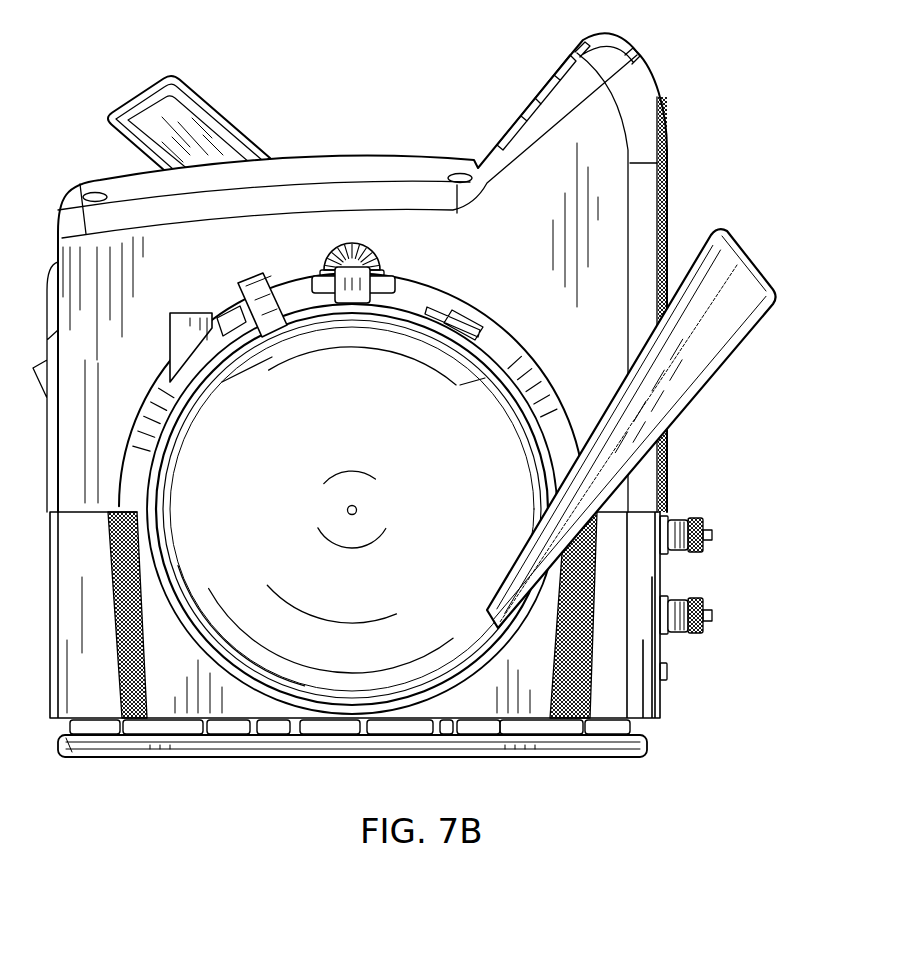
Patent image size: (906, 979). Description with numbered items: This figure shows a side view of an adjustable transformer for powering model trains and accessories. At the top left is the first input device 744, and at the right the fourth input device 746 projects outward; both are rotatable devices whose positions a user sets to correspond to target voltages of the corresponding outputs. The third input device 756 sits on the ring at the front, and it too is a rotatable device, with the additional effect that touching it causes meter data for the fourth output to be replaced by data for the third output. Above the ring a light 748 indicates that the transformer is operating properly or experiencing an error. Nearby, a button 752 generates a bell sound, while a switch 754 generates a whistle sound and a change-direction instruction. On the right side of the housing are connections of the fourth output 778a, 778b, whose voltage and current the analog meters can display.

The first input device 744 is at (170, 72).
The fourth input device 746 is at (747, 247).
The light 748 is at (352, 244).
The button 752 is at (182, 322).
The switch 754 is at (368, 284).
The third input device 756 is at (262, 278).
The fourth output 778a is at (697, 521).
The fourth output 778b is at (698, 598).